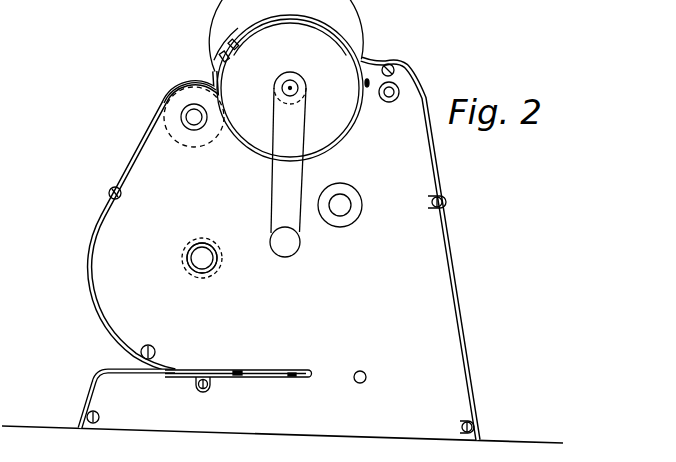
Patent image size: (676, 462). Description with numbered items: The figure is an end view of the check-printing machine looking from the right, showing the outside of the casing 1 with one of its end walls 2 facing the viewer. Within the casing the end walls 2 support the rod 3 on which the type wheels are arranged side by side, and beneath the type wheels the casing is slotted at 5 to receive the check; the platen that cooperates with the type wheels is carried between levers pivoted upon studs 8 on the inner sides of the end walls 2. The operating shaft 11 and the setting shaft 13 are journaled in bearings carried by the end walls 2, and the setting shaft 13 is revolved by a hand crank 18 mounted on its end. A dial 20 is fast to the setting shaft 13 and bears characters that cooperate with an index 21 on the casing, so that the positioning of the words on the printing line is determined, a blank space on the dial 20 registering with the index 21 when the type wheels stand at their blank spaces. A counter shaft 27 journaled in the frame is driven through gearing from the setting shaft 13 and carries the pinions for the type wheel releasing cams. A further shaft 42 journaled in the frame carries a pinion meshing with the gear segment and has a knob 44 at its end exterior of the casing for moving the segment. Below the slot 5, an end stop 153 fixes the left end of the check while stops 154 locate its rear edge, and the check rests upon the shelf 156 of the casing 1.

The casing 1 is at (267, 220).
The end walls 2 is at (183, 274).
The rod 3 is at (202, 262).
The slot 5 is at (276, 370).
The studs 8 is at (362, 375).
The operating shaft 11 is at (342, 203).
The setting shaft 13 is at (292, 86).
The hand crank 18 is at (290, 181).
The dial 20 is at (290, 88).
The index 21 is at (235, 40).
The counter shaft 27 is at (389, 102).
The shaft 42 is at (196, 120).
The knob 44 is at (180, 92).
The end stop 153 is at (238, 377).
The stops 154 is at (292, 378).
The shelf 156 is at (138, 376).